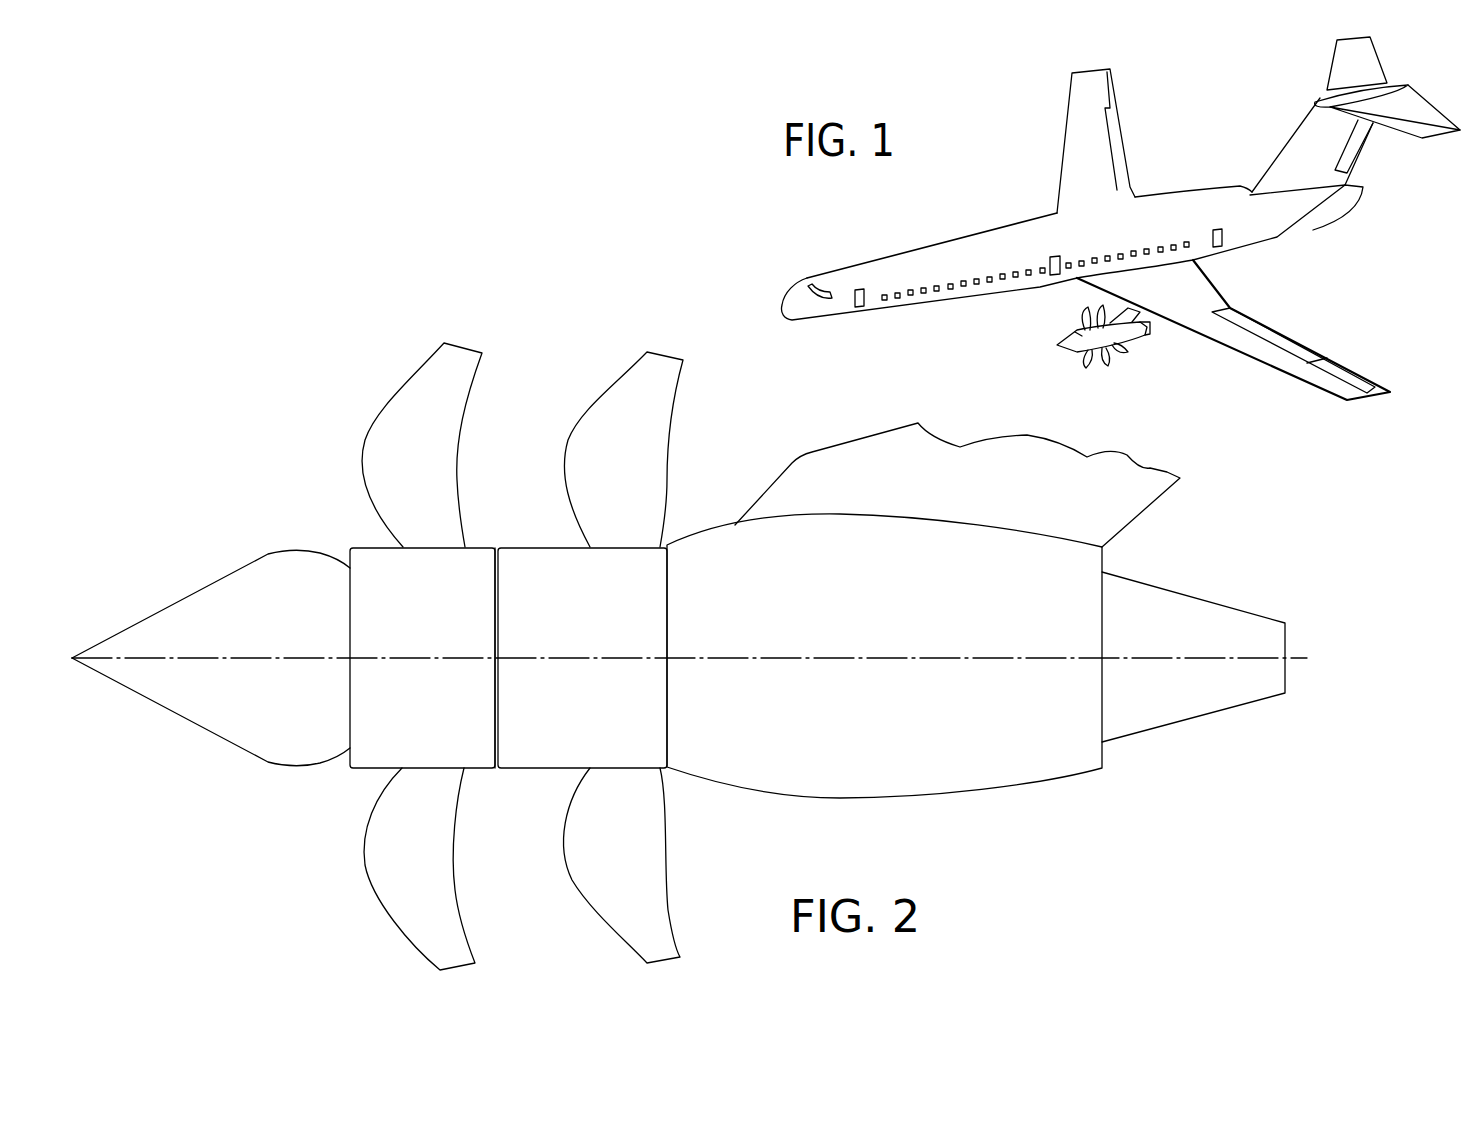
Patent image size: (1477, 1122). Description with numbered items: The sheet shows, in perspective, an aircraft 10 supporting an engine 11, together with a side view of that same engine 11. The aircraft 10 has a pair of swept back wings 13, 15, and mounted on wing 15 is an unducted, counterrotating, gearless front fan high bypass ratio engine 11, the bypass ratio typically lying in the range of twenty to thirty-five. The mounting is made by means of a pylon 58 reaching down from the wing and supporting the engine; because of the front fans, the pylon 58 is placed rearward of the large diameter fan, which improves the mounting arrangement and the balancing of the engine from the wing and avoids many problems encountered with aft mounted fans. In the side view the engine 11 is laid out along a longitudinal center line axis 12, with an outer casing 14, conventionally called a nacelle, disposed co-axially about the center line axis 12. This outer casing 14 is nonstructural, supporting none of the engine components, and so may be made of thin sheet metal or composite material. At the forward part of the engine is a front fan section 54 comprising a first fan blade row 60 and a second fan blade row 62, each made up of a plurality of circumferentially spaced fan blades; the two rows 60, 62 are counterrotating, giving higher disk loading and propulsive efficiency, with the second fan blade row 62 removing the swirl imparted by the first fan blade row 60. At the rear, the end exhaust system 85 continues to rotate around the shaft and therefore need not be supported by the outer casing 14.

In FIG. 1, the aircraft 10 is at (943, 233).
In FIG. 1, the engine 11 is at (1115, 321).
In FIG. 2, the engine 11 is at (689, 656).
In FIG. 2, the longitudinal center line axis 12 is at (953, 658).
In FIG. 1, the swept back wing 13 is at (1098, 138).
In FIG. 1, the outer casing 14 is at (1127, 330).
In FIG. 2, the outer casing 14 is at (895, 515).
In FIG. 1, the swept back wing 15 is at (1203, 297).
In FIG. 2, the front fan section 54 is at (492, 535).
In FIG. 1, the pylon 58 is at (1140, 295).
In FIG. 2, the pylon 58 is at (875, 452).
In FIG. 2, the first fan blade row 60 is at (403, 402).
In FIG. 2, the second fan blade row 62 is at (623, 402).
In FIG. 2, the end exhaust system 85 is at (1173, 592).